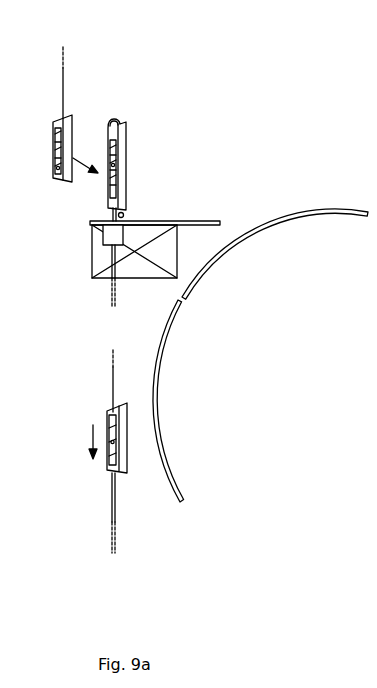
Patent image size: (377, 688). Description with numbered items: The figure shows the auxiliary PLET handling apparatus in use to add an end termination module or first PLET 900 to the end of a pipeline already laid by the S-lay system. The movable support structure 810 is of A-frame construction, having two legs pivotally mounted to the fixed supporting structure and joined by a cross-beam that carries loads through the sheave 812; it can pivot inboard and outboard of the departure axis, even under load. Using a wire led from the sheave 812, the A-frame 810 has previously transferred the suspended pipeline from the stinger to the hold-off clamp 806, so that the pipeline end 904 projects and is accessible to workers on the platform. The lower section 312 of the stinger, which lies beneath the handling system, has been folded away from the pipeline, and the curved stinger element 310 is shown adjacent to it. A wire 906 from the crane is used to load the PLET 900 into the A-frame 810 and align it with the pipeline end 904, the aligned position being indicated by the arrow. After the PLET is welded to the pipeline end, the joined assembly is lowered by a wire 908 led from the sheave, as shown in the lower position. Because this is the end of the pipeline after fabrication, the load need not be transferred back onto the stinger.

The curved track segment 310 is at (242, 249).
The lower section of the stinger 312 is at (166, 361).
The hold-off clamp 806 is at (123, 235).
The movable support structure 810 is at (128, 158).
The sheave 812 is at (122, 122).
The first PLET 900 is at (66, 116).
The end of pipeline 904 is at (112, 219).
The wire 906 is at (63, 80).
The wire 908 is at (113, 367).